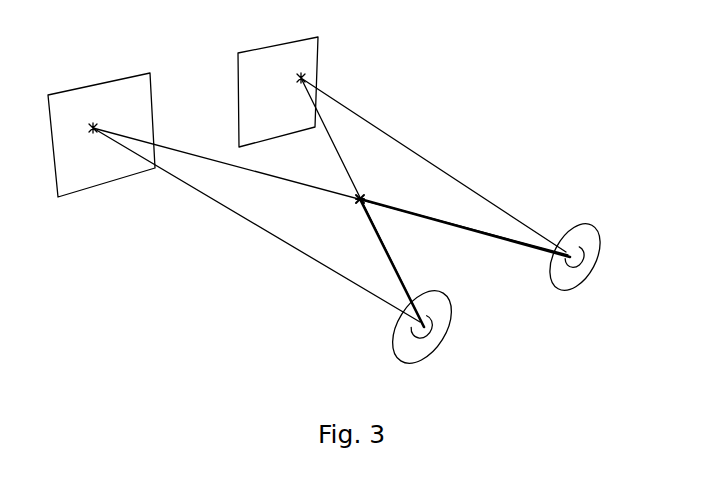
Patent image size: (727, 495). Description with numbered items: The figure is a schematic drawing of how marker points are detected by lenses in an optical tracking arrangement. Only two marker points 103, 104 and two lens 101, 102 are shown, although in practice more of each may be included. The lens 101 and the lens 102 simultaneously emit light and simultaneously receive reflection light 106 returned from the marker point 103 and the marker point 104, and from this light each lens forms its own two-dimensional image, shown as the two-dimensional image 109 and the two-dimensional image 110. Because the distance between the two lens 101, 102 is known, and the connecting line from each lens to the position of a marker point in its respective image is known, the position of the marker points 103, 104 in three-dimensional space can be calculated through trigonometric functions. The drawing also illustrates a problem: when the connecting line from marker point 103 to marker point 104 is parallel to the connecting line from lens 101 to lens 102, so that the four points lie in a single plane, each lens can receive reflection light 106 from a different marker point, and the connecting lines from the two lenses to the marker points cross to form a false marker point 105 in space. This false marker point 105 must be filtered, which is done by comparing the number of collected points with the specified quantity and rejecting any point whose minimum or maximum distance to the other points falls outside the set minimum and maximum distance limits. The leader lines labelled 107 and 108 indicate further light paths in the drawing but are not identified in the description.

The lens 101 is at (430, 330).
The lens 102 is at (594, 256).
The marker point 103 is at (87, 147).
The marker point 104 is at (280, 98).
The false marker point 105 is at (383, 189).
The reflection light 106 is at (208, 207).
The lines of sight from second target point to cameras 107 is at (345, 160).
The lines from intersection point to cameras 108 is at (383, 247).
The 2D image 109 is at (101, 128).
The 2D image 110 is at (278, 79).